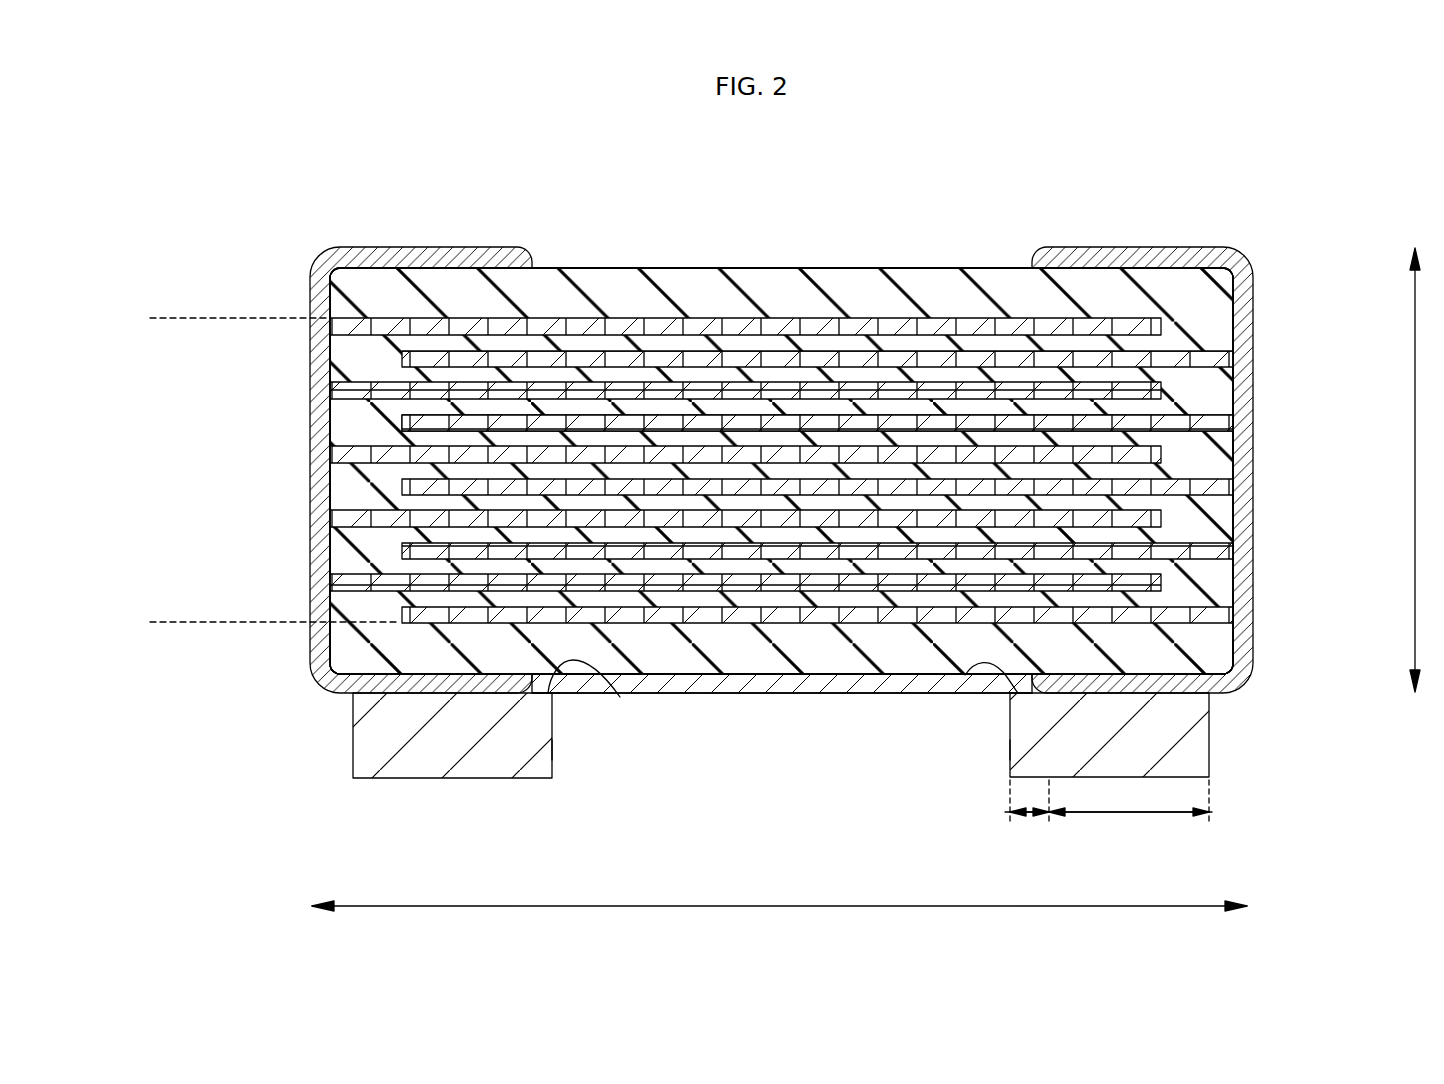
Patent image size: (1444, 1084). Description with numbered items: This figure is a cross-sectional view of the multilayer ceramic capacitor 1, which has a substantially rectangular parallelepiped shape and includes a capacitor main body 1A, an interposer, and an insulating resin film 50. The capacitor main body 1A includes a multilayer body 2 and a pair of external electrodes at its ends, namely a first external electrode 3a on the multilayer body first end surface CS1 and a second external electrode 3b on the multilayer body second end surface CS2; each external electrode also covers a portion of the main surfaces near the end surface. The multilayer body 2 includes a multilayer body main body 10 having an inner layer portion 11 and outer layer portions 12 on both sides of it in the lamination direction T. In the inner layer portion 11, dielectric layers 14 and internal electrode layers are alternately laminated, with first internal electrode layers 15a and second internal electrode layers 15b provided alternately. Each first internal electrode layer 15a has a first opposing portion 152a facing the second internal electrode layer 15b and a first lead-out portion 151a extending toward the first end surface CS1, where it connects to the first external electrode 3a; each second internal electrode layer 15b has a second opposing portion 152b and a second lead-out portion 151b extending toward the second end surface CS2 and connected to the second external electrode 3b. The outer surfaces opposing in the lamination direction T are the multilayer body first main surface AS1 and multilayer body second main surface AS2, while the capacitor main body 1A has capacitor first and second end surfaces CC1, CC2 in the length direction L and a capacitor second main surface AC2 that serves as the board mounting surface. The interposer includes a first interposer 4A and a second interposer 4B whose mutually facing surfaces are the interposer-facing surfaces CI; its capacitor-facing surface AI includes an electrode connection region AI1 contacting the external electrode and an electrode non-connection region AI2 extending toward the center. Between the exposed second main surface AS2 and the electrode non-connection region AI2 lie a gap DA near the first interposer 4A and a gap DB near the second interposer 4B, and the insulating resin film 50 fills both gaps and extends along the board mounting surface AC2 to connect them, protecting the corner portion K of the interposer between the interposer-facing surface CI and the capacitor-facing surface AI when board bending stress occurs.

The multilayer ceramic capacitor 1 is at (1102, 176).
The capacitor main body 1A is at (538, 178).
The multilayer body 2 is at (647, 420).
The first external electrode 3a is at (416, 248).
The second external electrode 3b is at (1190, 248).
The multilayer body main body 10 is at (115, 270).
The inner layer portion 11 is at (762, 470).
The outer layer portion 12 is at (365, 294).
The dielectric layer 14 is at (345, 350).
The first internal electrode layer 15a is at (692, 414).
The second internal electrode layer 15b is at (872, 443).
The first lead-out portion 151a is at (345, 386).
The first opposing portion 152a is at (398, 420).
The second lead-out portion 151b is at (1200, 422).
The second opposing portion 152b is at (1168, 455).
The multilayer body first end surface CS1 is at (345, 543).
The capacitor first end surface CC1 is at (345, 596).
The multilayer body second end surface CS2 is at (1233, 582).
The capacitor second end surface CC2 is at (1253, 522).
The multilayer body first main surface AS1 is at (905, 268).
The multilayer body second main surface AS2 is at (806, 688).
The capacitor second main surface AC2 is at (427, 695).
The insulating resin film 50 is at (736, 688).
The first interposer 4A is at (367, 748).
The second interposer 4B is at (1195, 748).
The corner portion K is at (556, 697).
The gap DA is at (620, 697).
The gap DB is at (965, 675).
The interposer-facing surface CI is at (553, 750).
The electrode connection region AI1 is at (1129, 812).
The electrode non-connection region AI2 is at (1031, 812).
The capacitor-facing surface AI is at (1152, 842).
The length direction L is at (779, 922).
The lamination direction T is at (1426, 470).